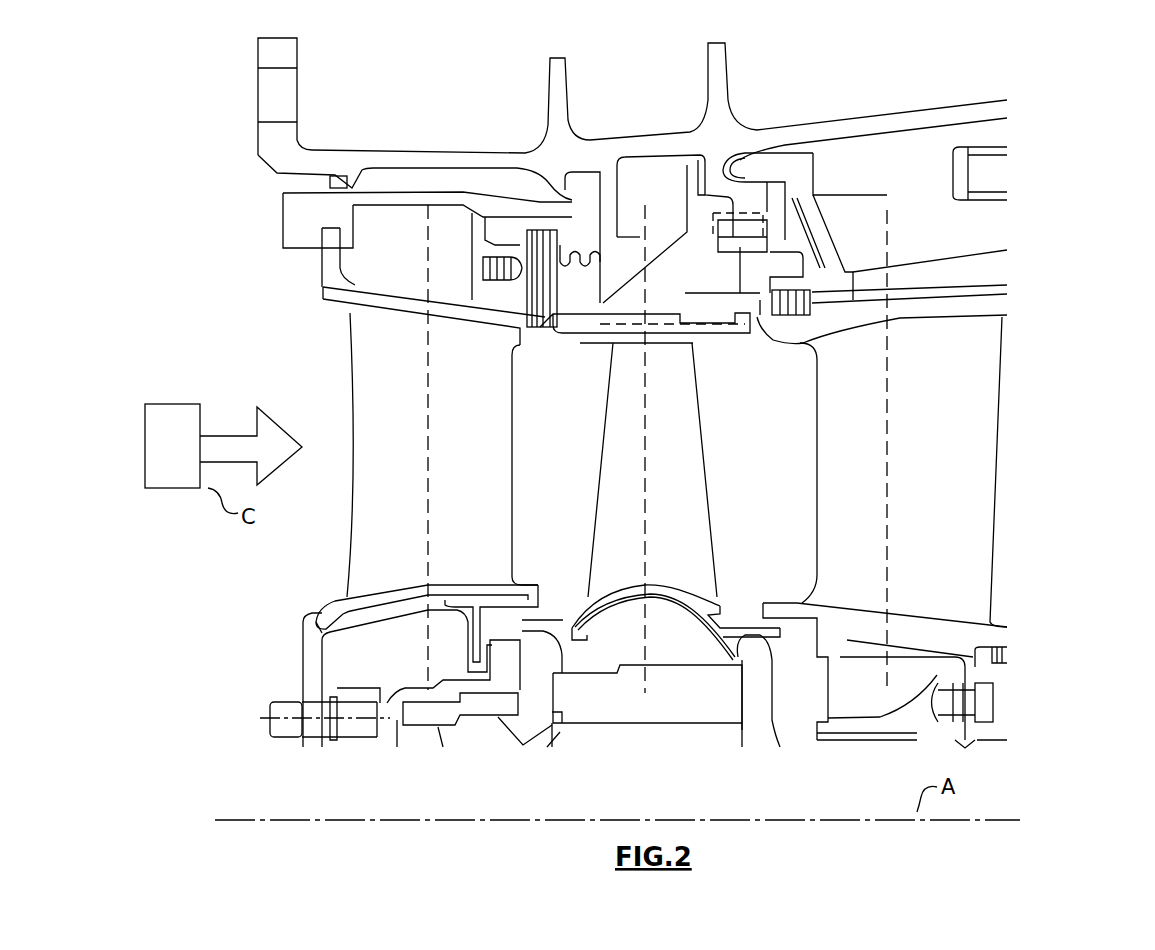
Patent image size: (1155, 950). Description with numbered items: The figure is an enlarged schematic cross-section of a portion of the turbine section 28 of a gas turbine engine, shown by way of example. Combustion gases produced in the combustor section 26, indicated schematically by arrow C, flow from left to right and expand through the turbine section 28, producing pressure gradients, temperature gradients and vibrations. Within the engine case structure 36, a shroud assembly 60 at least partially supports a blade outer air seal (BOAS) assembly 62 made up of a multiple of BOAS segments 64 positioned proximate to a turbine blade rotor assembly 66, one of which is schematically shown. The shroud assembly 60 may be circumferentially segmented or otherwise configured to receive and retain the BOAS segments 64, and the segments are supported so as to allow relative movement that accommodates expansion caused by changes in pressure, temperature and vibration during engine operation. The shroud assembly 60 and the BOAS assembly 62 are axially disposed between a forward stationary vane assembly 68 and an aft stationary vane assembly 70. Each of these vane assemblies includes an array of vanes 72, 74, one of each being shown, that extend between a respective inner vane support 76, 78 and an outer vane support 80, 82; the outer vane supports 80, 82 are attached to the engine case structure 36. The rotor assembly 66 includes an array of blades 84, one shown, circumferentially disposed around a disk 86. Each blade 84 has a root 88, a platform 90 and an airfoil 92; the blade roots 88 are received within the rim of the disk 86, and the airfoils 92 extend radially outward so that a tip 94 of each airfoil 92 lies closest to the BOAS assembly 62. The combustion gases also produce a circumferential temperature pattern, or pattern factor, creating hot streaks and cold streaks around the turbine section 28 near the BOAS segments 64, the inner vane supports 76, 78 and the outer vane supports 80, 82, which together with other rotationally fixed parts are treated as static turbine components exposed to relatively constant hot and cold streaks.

The combustor section 26 is at (223, 446).
The turbine section 28 is at (1061, 130).
The engine case structure 36 is at (816, 127).
The shroud assembly 60 is at (641, 178).
The blade outer air seal (BOAS) assembly 62 is at (595, 342).
The BOAS segments 64 is at (735, 340).
The turbine blade rotor assembly 66 is at (609, 736).
The forward stationary vane assembly 68 is at (290, 615).
The aft stationary vane assembly 70 is at (1018, 605).
The vane 72 is at (442, 455).
The vane 74 is at (903, 472).
The inner vane support 76 is at (341, 600).
The inner vane support 78 is at (937, 630).
The outer vane support 80 is at (350, 315).
The outer vane support 82 is at (968, 305).
The blade 84 is at (688, 518).
The disk 86 is at (680, 736).
The root 88 is at (647, 703).
The platform 90 is at (718, 598).
The airfoil 92 is at (652, 449).
The tip 94 is at (666, 335).